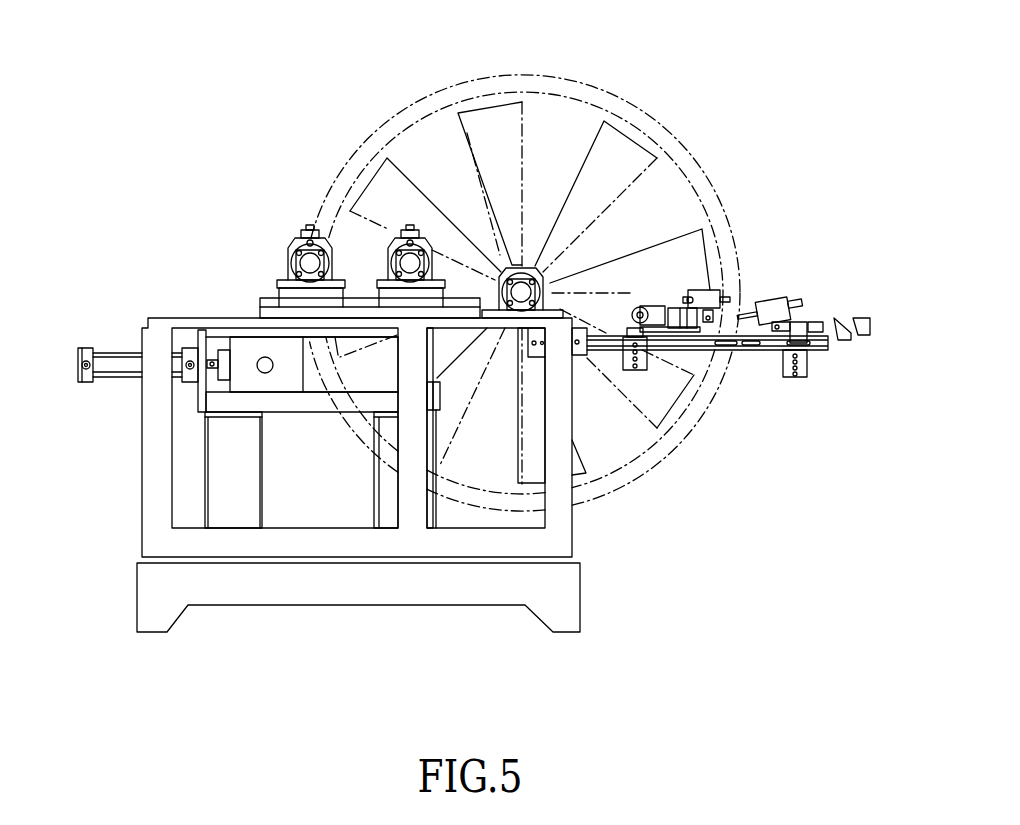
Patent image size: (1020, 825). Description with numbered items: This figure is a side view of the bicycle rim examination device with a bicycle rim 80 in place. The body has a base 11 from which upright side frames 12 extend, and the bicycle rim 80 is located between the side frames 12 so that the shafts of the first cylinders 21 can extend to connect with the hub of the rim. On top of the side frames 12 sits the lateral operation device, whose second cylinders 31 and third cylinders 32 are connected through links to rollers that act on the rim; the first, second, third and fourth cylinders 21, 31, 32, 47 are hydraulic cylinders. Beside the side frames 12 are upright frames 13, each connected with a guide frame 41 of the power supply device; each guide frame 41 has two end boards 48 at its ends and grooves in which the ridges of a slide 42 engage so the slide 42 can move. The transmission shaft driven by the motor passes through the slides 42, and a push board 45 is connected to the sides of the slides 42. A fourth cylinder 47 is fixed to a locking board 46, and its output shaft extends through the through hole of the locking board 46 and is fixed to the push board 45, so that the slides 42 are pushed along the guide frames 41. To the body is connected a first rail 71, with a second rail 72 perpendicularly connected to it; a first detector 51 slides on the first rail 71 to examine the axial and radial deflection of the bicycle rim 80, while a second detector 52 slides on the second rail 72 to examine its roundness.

The base 11 is at (380, 587).
The side frame 12 is at (148, 487).
The upright frame 13 is at (238, 485).
The first cylinder 21 is at (526, 290).
The second cylinder 31 is at (408, 263).
The third cylinder 32 is at (310, 263).
The guide frame 41 is at (317, 405).
The slide 42 is at (252, 343).
The push board 45 is at (223, 350).
The locking board 46 is at (198, 338).
The fourth cylinder 47 is at (115, 358).
The end board 48 is at (440, 383).
The first detector 51 is at (705, 298).
The second detector 52 is at (777, 303).
The first rail 71 is at (742, 348).
The second rail 72 is at (817, 323).
The bicycle rim 80 is at (700, 172).